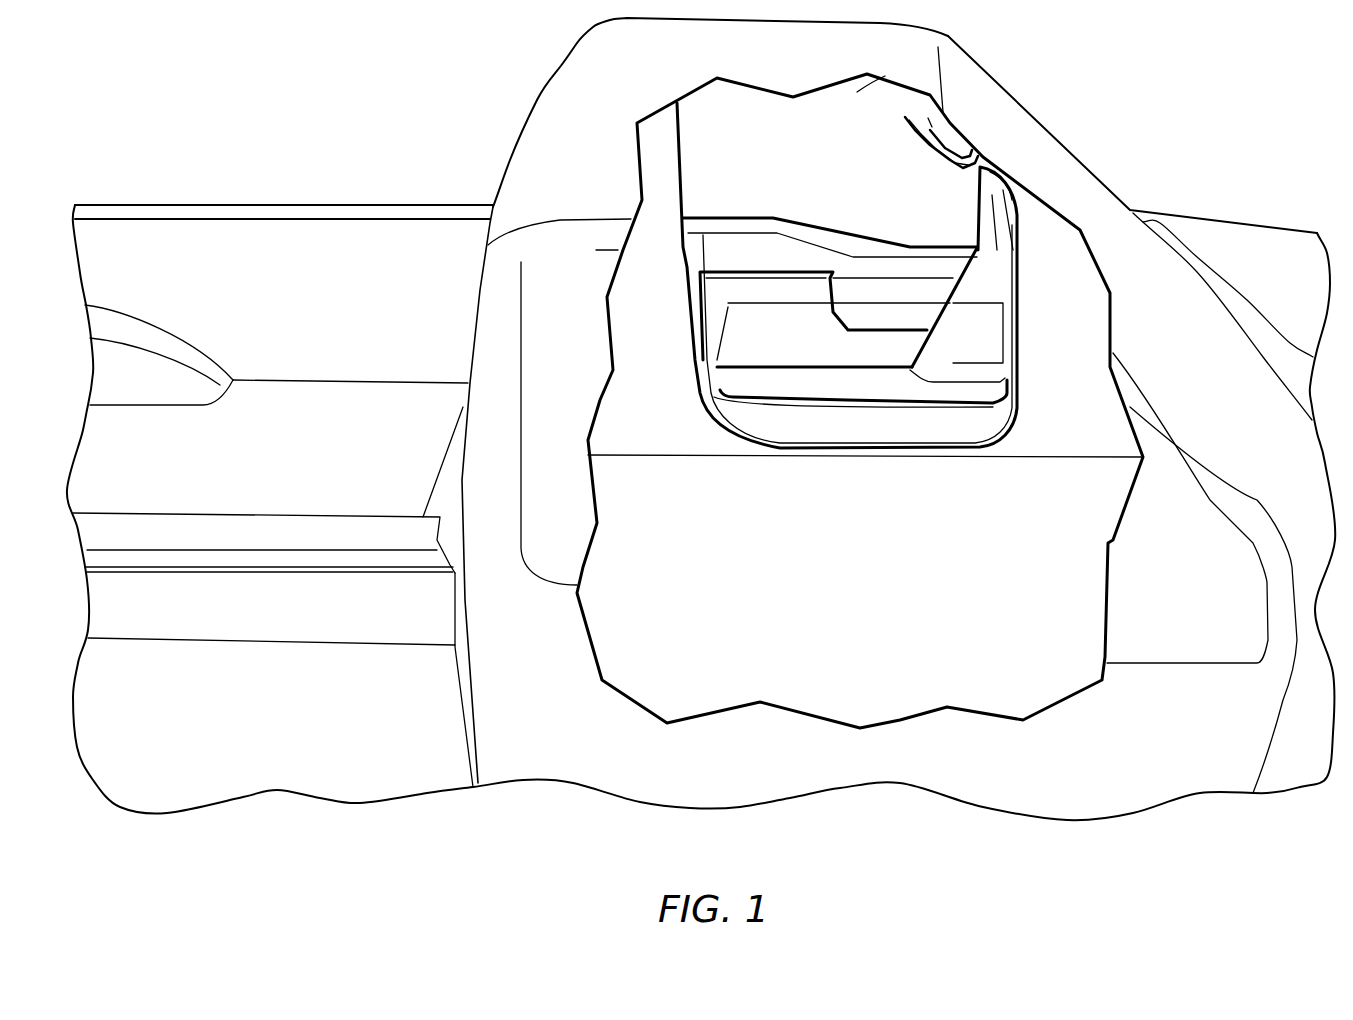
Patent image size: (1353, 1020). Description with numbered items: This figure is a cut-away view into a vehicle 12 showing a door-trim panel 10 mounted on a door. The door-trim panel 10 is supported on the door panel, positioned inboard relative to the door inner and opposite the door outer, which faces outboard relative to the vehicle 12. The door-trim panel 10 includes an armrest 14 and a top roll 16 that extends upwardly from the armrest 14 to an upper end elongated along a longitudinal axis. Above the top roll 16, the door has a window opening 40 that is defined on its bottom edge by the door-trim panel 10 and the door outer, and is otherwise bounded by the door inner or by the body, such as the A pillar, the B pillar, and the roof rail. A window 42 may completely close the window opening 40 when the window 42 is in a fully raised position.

The door-trim panel 10 is at (1036, 432).
The vehicle 12 is at (1222, 187).
The armrest 14 is at (732, 287).
The top roll 16 is at (753, 252).
The window opening 40 is at (878, 105).
The window 42 is at (815, 107).